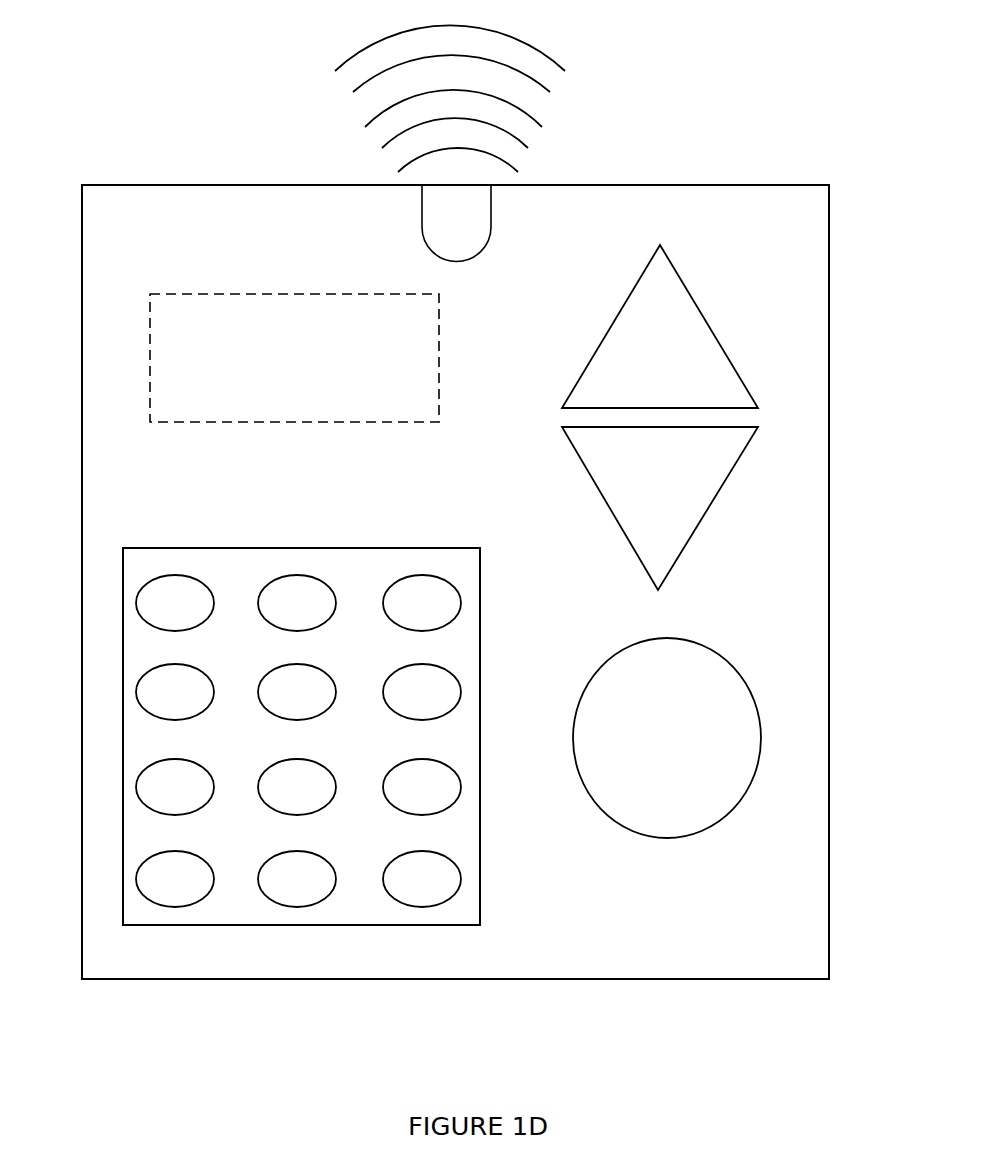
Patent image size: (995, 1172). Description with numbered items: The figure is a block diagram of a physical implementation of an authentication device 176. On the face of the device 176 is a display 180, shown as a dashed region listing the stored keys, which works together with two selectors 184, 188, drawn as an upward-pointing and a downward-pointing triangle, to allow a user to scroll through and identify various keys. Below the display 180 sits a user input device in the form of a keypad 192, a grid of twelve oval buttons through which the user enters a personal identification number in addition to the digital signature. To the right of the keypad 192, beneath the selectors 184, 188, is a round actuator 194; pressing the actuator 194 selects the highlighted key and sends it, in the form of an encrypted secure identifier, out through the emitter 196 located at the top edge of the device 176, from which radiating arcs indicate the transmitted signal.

The authentication device 176 is at (423, 514).
The display 180 is at (150, 343).
The selector 184 is at (700, 305).
The selector 188 is at (708, 507).
The keypad 192 is at (480, 889).
The actuator 194 is at (737, 805).
The emitter 196 is at (492, 207).